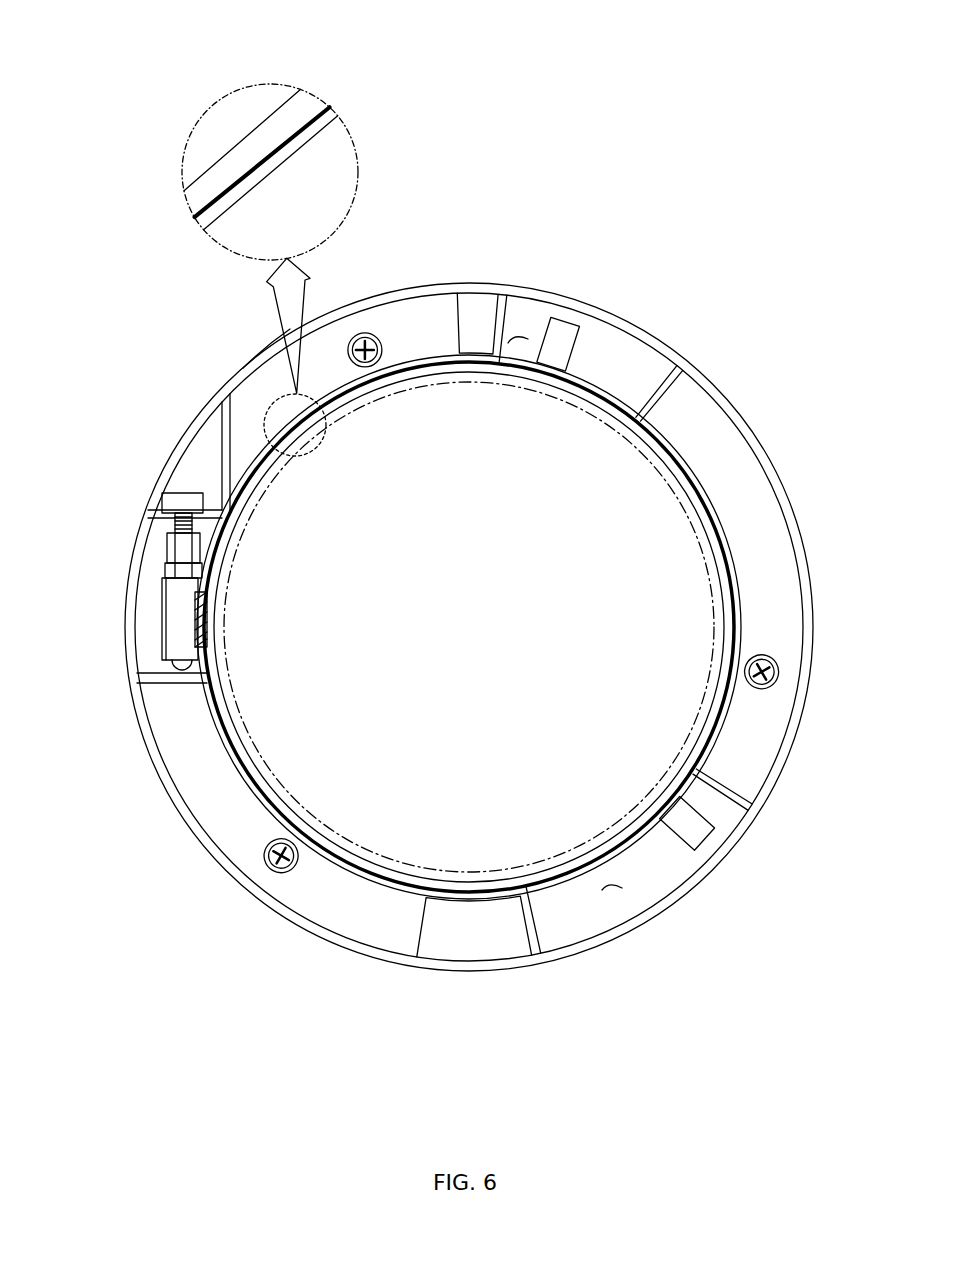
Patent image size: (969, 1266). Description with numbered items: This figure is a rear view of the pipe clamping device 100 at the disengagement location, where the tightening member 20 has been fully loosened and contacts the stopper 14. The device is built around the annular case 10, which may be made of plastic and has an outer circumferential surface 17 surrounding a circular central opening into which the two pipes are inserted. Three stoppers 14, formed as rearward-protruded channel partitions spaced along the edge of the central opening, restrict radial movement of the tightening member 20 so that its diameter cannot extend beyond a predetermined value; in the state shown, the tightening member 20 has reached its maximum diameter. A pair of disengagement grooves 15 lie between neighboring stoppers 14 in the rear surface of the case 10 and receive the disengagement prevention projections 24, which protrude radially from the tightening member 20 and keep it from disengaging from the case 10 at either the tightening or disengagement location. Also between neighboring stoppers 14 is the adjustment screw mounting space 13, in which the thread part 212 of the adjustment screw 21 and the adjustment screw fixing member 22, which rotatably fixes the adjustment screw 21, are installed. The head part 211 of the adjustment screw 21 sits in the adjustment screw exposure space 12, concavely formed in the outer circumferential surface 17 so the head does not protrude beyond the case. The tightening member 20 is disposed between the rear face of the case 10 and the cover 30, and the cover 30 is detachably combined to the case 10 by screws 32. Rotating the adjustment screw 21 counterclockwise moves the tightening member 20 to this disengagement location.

The pipe clamping device 100 is at (727, 277).
The case 10 is at (716, 381).
The adjustment screw exposure space 12 is at (212, 466).
The adjustment screw mounting space 13 is at (155, 581).
The stopper 14 is at (459, 300).
The disengagement groove 15 is at (515, 342).
The outer circumferential surface 17 is at (243, 368).
The tightening member 20 is at (606, 387).
The adjustment screw 21 is at (156, 493).
The head part 211 is at (178, 497).
The thread part 212 is at (178, 667).
The adjustment screw fixing member 22 is at (172, 610).
The disengagement prevention projection 24 is at (560, 342).
The cover 30 is at (712, 622).
The screw 32 is at (368, 335).